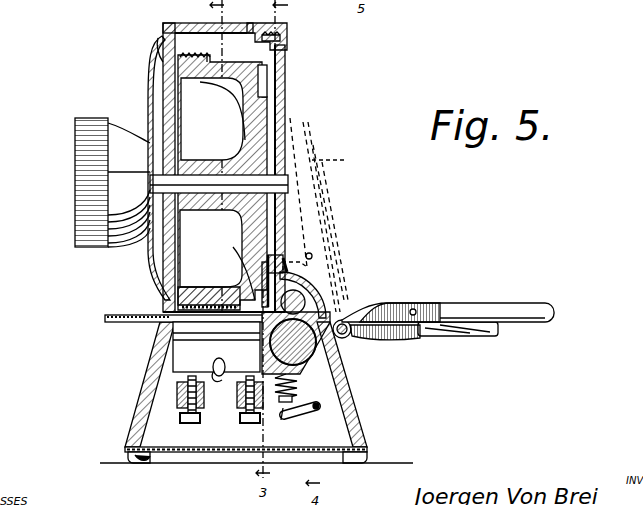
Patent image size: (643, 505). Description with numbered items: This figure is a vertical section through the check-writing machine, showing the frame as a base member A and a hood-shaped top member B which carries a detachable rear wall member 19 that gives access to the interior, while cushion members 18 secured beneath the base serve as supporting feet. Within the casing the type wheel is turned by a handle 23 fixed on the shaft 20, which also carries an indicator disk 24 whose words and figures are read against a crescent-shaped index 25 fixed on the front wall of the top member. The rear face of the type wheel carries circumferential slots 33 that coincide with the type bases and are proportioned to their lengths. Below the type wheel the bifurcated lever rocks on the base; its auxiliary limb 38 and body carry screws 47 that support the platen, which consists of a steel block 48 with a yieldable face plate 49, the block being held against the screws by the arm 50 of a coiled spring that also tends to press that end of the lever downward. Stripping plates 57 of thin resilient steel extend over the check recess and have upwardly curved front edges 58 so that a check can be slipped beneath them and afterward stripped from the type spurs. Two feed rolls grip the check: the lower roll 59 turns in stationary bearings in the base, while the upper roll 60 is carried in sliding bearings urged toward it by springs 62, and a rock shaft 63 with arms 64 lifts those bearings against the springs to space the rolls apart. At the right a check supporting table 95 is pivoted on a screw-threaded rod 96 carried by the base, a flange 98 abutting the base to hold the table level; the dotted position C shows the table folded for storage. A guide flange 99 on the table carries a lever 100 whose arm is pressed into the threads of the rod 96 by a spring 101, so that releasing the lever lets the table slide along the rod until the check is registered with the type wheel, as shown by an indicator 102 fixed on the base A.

The cushion members 18 is at (140, 458).
The rear wall member 19 is at (285, 97).
The shaft 20 is at (213, 163).
The handle 23 is at (75, 182).
The indicator disk 24 is at (146, 268).
The crescent-shaped index 25 is at (160, 63).
The slots 33 is at (265, 92).
The auxiliary limb 38 is at (177, 397).
The screws 47 is at (240, 422).
The platen block 48 is at (178, 357).
The face plate 49 is at (175, 328).
The spring arm 50 is at (218, 380).
The stripping plates 57 is at (215, 300).
The upwardly curved front edges 58 is at (303, 272).
The feed roll 59 is at (344, 321).
The feed roll 60 is at (300, 294).
The springs 62 is at (297, 388).
The rock shaft 63 is at (320, 404).
The arms 64 is at (295, 418).
The check supporting table 95 is at (337, 160).
The screw-threaded rod 96 is at (372, 319).
The flange 98 is at (320, 357).
The guide flange 99 is at (514, 306).
The lever 100 is at (375, 333).
The spring 101 is at (208, 62).
The indicator 102 is at (190, 51).
The base member A is at (133, 425).
The top member B is at (168, 97).
The raised position C is at (288, 118).